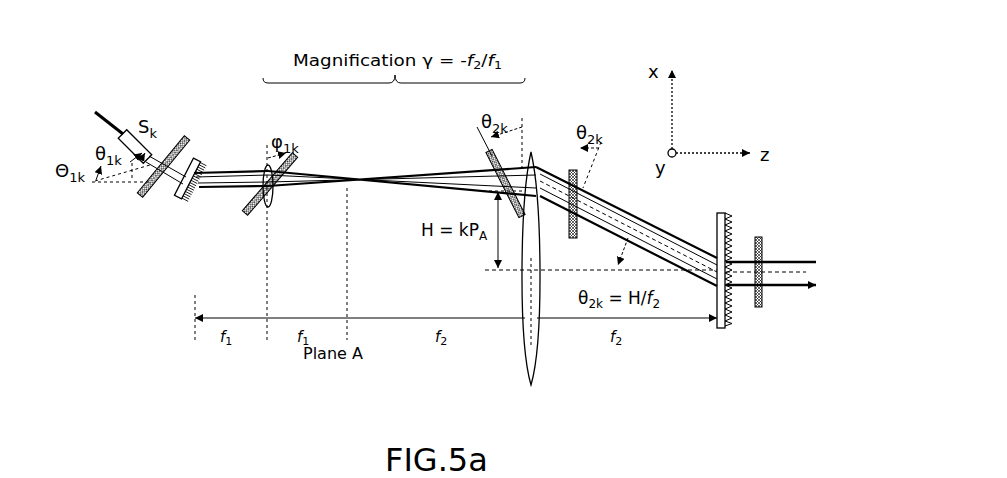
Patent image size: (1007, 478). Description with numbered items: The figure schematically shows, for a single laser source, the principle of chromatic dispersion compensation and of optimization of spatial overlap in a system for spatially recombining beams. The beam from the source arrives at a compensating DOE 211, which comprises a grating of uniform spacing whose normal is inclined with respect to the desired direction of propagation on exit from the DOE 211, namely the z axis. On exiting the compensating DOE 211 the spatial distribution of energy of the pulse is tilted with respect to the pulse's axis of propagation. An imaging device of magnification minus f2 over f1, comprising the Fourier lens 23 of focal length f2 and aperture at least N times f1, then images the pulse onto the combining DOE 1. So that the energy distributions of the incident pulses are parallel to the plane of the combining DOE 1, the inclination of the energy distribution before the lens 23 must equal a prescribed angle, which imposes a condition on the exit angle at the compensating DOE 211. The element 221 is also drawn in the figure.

The combining DOE 1 is at (718, 212).
The compensating DOE 211 is at (180, 200).
The lens 221 is at (262, 171).
The Fourier lens 23 is at (520, 357).